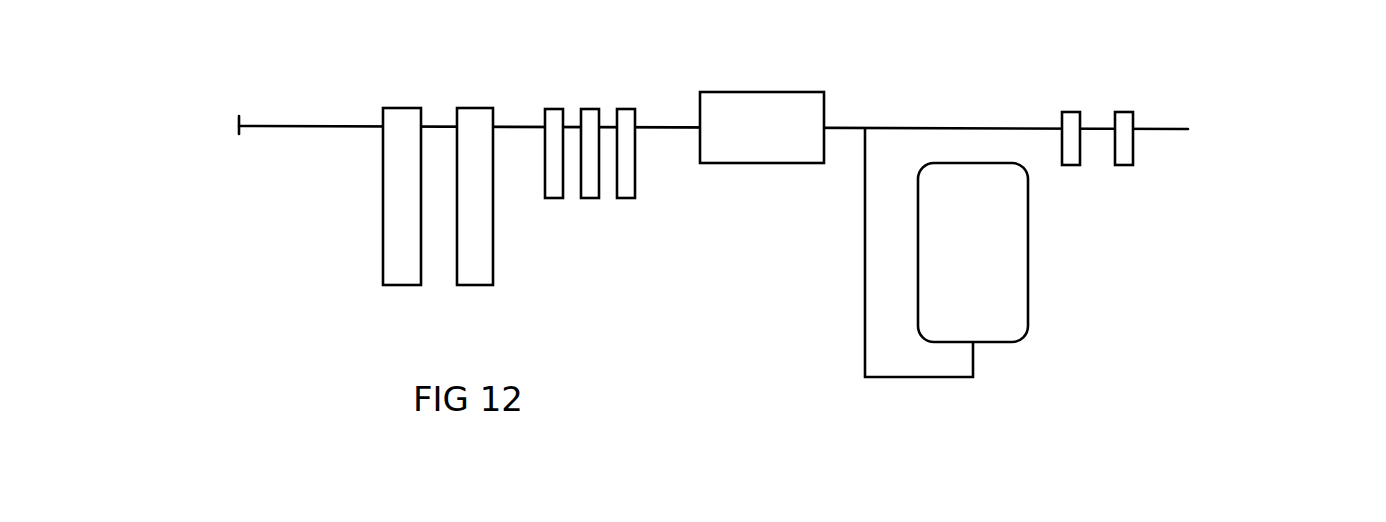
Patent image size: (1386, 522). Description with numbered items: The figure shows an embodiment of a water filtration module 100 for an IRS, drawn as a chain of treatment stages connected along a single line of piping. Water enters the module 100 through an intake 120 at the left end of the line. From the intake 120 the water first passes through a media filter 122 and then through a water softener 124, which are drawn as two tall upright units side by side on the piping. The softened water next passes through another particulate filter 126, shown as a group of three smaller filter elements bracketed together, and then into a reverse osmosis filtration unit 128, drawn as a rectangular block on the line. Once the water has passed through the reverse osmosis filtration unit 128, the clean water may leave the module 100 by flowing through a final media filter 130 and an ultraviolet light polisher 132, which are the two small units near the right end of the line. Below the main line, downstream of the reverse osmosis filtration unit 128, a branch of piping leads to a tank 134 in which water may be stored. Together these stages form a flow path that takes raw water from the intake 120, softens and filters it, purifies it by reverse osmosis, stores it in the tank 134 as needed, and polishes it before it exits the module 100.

The water filtration module 100 is at (1177, 60).
The intake 120 is at (239, 134).
The media filter 122 is at (383, 254).
The water softener 124 is at (493, 253).
The particulate filter 126 is at (647, 101).
The reverse osmosis filtration unit 128 is at (750, 95).
The final media filter 130 is at (1064, 111).
The ultraviolet light polisher 132 is at (1120, 110).
The tank 134 is at (1030, 298).